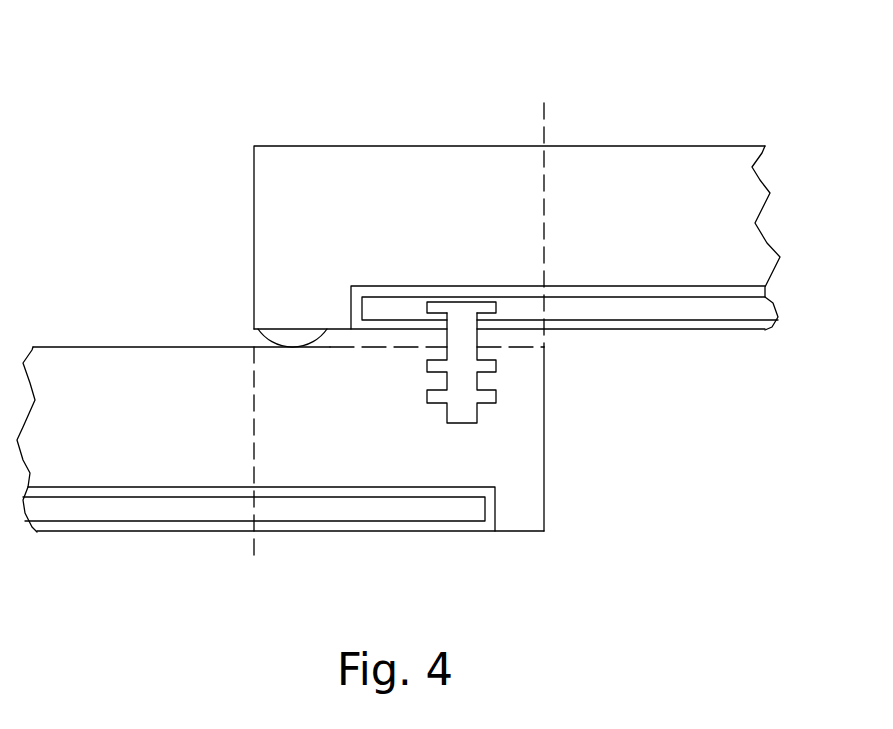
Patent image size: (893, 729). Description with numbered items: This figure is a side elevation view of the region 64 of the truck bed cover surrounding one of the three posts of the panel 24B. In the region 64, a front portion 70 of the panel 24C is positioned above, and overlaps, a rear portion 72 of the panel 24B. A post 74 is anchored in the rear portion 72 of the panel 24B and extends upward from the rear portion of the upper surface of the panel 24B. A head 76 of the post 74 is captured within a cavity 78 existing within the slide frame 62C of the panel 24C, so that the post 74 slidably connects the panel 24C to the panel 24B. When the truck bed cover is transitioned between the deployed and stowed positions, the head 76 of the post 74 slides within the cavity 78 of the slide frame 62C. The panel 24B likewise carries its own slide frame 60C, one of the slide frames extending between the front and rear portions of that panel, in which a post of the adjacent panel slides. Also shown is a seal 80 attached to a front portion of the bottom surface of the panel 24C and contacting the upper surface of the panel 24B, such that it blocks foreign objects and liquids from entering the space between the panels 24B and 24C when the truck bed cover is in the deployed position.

The region 64 is at (364, 66).
The front portion 70 is at (398, 195).
The rear portion 72 is at (385, 440).
The post 74 is at (465, 338).
The head 76 is at (462, 308).
The cavity 78 is at (382, 308).
The seal 80 is at (287, 328).
The slide frame 62C is at (692, 332).
The slide frame 60C is at (215, 532).
The panel 24C is at (473, 254).
The panel 24B is at (324, 477).